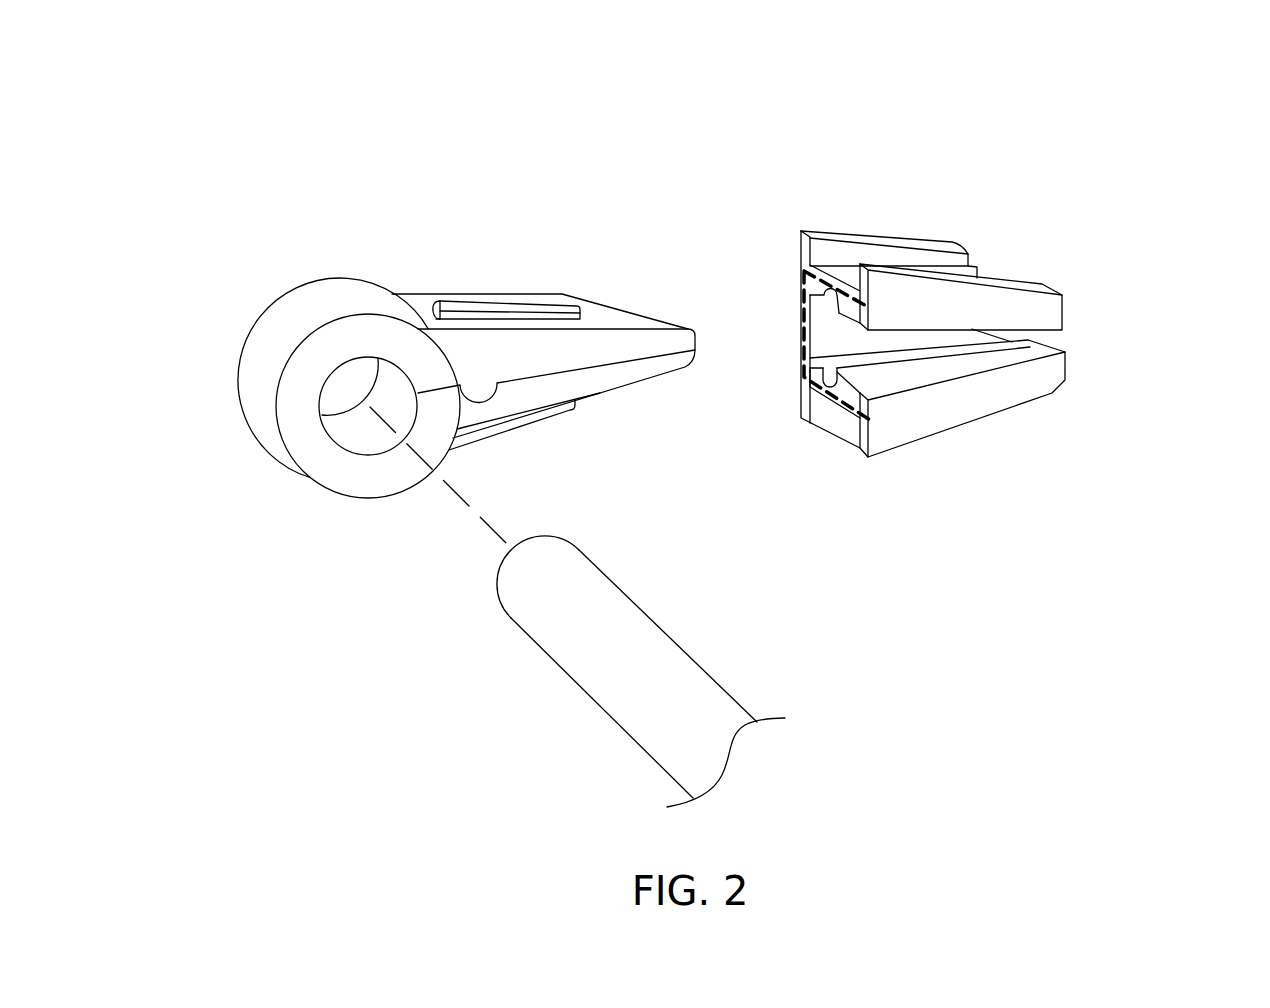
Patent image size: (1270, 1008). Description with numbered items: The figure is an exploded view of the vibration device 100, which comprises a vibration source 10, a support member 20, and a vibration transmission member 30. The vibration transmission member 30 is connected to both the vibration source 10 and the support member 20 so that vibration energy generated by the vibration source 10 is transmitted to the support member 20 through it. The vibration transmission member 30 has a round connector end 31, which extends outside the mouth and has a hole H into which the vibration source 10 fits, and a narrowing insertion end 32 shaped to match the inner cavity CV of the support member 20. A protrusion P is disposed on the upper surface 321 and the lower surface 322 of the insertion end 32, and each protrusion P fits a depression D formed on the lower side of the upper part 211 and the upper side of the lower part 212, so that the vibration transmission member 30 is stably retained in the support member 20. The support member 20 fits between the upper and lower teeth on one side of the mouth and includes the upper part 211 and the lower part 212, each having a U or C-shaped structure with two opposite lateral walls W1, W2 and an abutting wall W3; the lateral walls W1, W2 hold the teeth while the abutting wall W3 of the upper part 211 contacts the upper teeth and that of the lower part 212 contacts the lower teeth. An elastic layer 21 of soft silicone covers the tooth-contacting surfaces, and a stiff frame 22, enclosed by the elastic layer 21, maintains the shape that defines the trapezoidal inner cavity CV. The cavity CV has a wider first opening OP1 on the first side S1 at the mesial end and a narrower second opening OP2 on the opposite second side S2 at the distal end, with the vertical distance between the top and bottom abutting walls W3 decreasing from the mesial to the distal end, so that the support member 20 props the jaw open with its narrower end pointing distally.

The vibration device 100 is at (149, 51).
The vibration source 10 is at (585, 655).
The support member 20 is at (930, 187).
The elastic layer 21 is at (820, 230).
The frame 22 is at (801, 270).
The upper part 211 is at (1040, 295).
The lower part 212 is at (1053, 370).
The vibration transmission member 30 is at (262, 274).
The connector end 31 is at (258, 353).
The insertion end 32 is at (610, 322).
The upper surface 321 is at (415, 304).
The lower surface 322 is at (669, 382).
The protrusion P is at (527, 312).
The hole H is at (370, 432).
The depression D is at (830, 299).
The lateral wall W1 is at (890, 238).
The lateral wall W2 is at (1028, 278).
The abutting wall W3 is at (969, 262).
The first side S1 is at (861, 332).
The second side S2 is at (1063, 320).
The first opening OP1 is at (857, 393).
The second opening OP2 is at (1063, 342).
The inner cavity CV is at (963, 361).